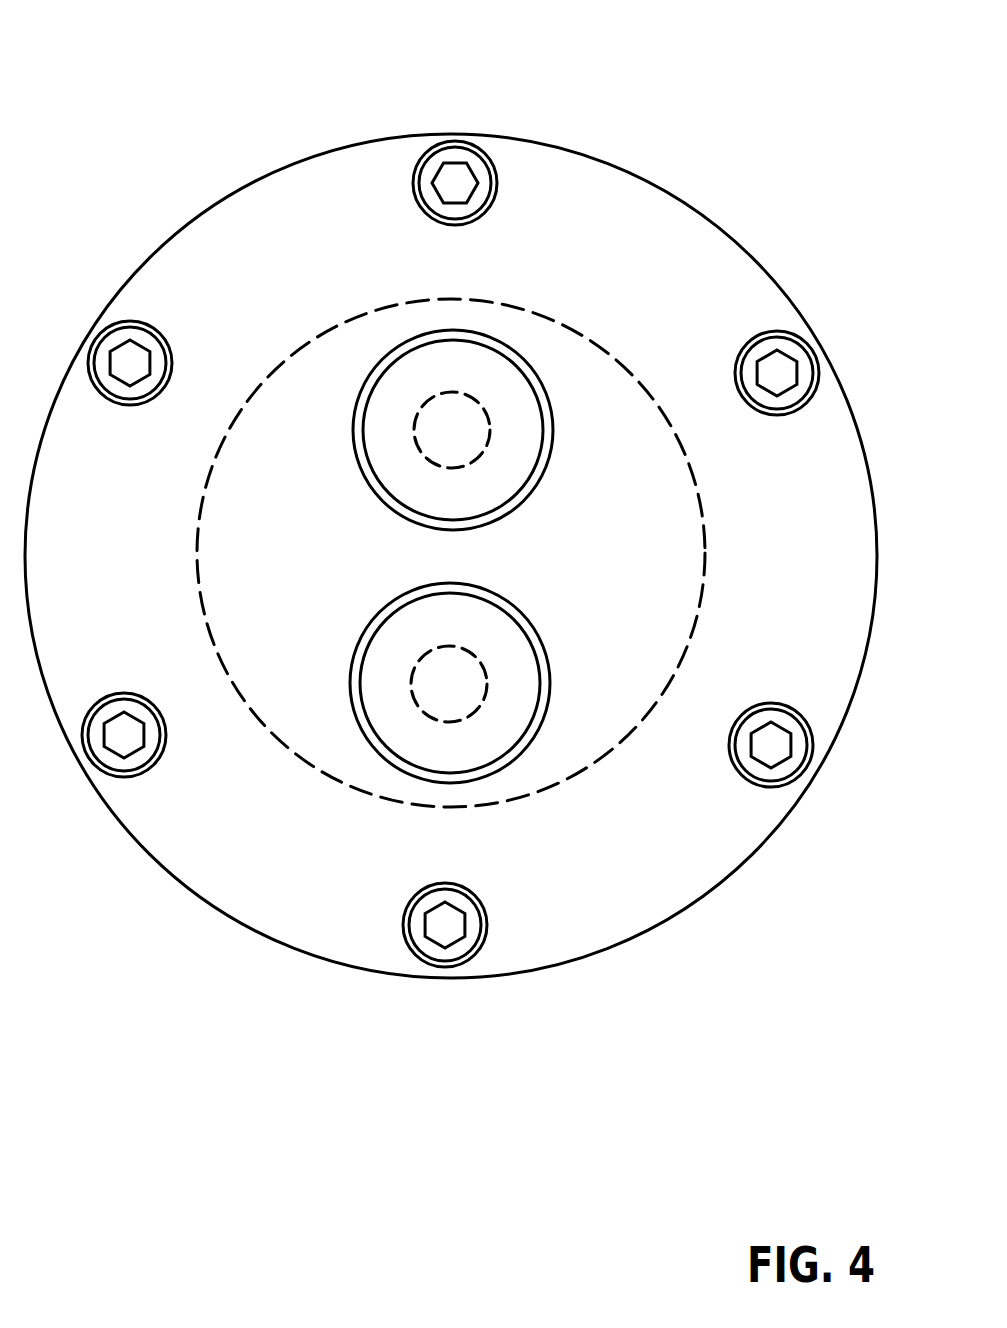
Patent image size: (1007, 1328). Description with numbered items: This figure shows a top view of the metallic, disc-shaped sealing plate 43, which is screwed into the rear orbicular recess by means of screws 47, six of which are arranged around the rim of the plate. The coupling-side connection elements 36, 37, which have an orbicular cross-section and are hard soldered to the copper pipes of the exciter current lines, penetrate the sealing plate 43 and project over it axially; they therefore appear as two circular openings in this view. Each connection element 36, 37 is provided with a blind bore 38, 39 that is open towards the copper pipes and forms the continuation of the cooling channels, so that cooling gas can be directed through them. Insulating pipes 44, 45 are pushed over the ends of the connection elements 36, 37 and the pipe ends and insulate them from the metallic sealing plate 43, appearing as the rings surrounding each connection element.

The sealing plate 43 is at (669, 842).
The screws 47 is at (118, 335).
The insulating pipe 45 is at (405, 348).
The coupling-side connection element 37 is at (488, 378).
The blind bore 39 is at (437, 443).
The insulating pipe 44 is at (397, 758).
The coupling-side connection element 36 is at (483, 734).
The blind bore 38 is at (434, 698).